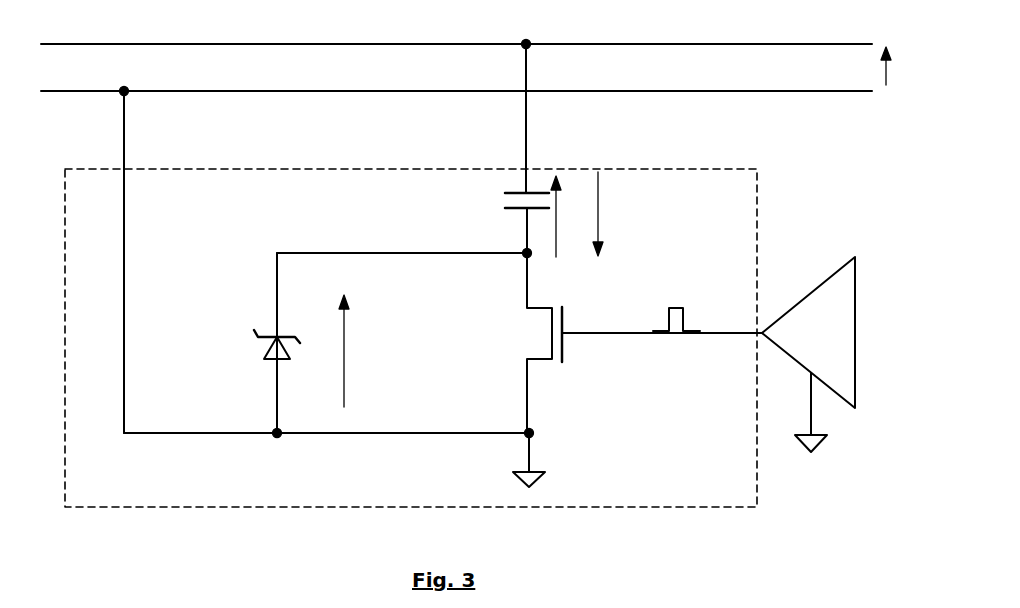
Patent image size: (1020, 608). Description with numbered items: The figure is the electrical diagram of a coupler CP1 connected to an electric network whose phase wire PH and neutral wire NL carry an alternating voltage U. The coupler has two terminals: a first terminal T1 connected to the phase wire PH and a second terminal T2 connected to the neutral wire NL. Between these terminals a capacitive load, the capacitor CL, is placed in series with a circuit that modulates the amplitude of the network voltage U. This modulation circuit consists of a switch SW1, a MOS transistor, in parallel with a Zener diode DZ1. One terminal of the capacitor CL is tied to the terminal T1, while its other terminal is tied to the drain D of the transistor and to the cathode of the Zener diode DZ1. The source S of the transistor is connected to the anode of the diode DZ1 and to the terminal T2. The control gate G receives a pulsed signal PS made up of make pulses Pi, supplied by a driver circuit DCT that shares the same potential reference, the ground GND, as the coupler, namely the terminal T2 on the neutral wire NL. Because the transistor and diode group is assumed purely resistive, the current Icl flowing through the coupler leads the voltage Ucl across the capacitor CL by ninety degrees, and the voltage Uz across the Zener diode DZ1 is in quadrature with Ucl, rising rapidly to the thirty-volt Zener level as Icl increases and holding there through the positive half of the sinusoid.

The coupler CP1 is at (411, 338).
The phase wire PH is at (456, 33).
The neutral wire NL is at (456, 81).
The alternating voltage U is at (899, 66).
The second terminal T2 is at (139, 262).
The first terminal T1 is at (541, 118).
The capacitor CL is at (513, 208).
The voltage at the terminals of the capacitor Ucl is at (570, 216).
The current passing through the coupler Icl is at (609, 214).
The switch SW1 is at (563, 347).
The drain D is at (511, 299).
The control gate G is at (575, 324).
The source S is at (513, 365).
The make pulses Pi is at (680, 308).
The pulsed signal PS is at (730, 317).
The driver circuit DCT is at (808, 354).
The Zener diode DZ1 is at (282, 360).
The voltage at the terminals of the Zener diode Uz is at (360, 351).
The ground GND is at (554, 458).